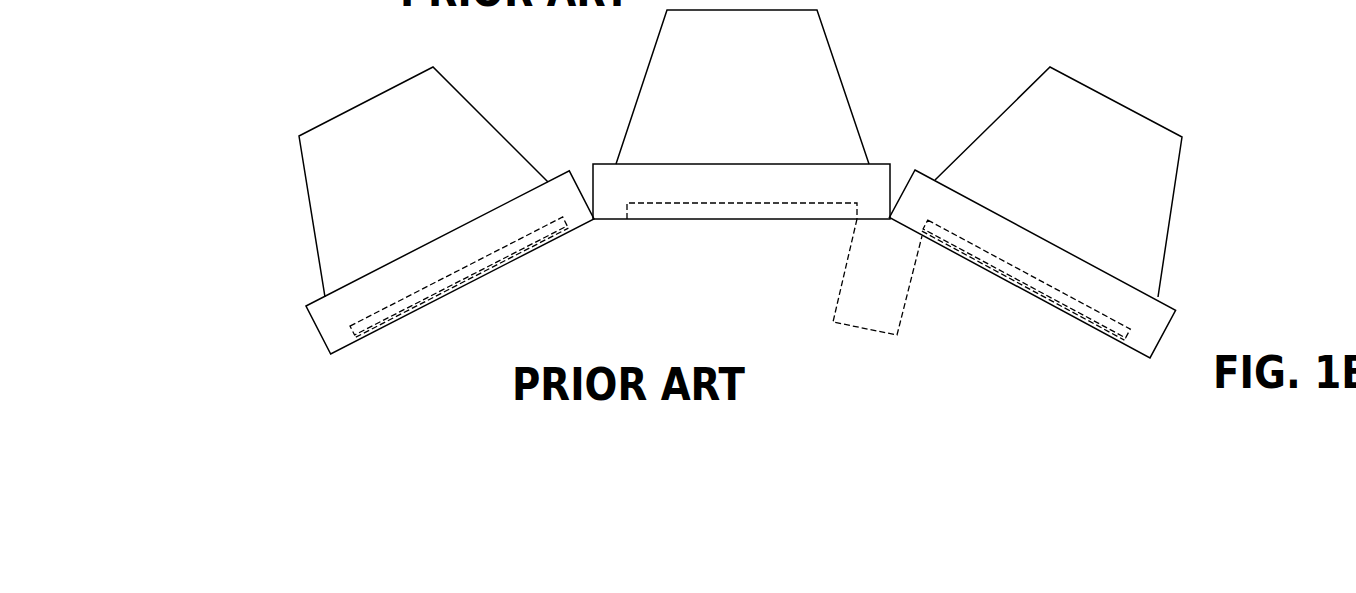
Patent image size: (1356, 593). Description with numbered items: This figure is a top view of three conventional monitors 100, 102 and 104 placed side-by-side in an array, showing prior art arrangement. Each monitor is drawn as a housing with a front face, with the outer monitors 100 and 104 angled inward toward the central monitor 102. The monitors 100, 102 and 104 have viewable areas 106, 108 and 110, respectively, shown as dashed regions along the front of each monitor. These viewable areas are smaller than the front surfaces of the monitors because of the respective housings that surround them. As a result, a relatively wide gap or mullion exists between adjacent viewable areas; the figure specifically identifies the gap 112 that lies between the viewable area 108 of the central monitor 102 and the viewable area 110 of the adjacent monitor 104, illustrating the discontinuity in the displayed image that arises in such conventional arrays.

The conventional monitor 100 is at (335, 118).
The conventional monitor 102 is at (836, 65).
The conventional monitor 104 is at (1115, 102).
The viewable area 106 is at (457, 268).
The viewable area 108 is at (695, 203).
The viewable area 110 is at (1052, 284).
The gap 112 is at (833, 323).